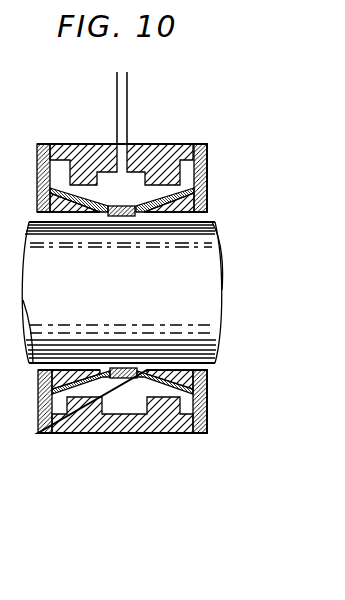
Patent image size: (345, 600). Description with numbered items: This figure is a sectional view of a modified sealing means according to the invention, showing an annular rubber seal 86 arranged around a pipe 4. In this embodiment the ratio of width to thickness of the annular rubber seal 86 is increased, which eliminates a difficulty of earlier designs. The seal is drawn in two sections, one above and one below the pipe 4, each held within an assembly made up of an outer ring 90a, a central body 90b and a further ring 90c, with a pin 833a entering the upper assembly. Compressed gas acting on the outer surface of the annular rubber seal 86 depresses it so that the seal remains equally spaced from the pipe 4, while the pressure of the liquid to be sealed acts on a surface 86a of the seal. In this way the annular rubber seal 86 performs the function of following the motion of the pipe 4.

The pipe 4 is at (222, 278).
The annular rubber seal 86 is at (194, 177).
The surface of the annular rubber seal 86a is at (121, 216).
The outer wall ring 90a is at (38, 143).
The seal body 90b is at (140, 144).
The outer wall ring 90c is at (207, 145).
The pin 833a is at (122, 72).